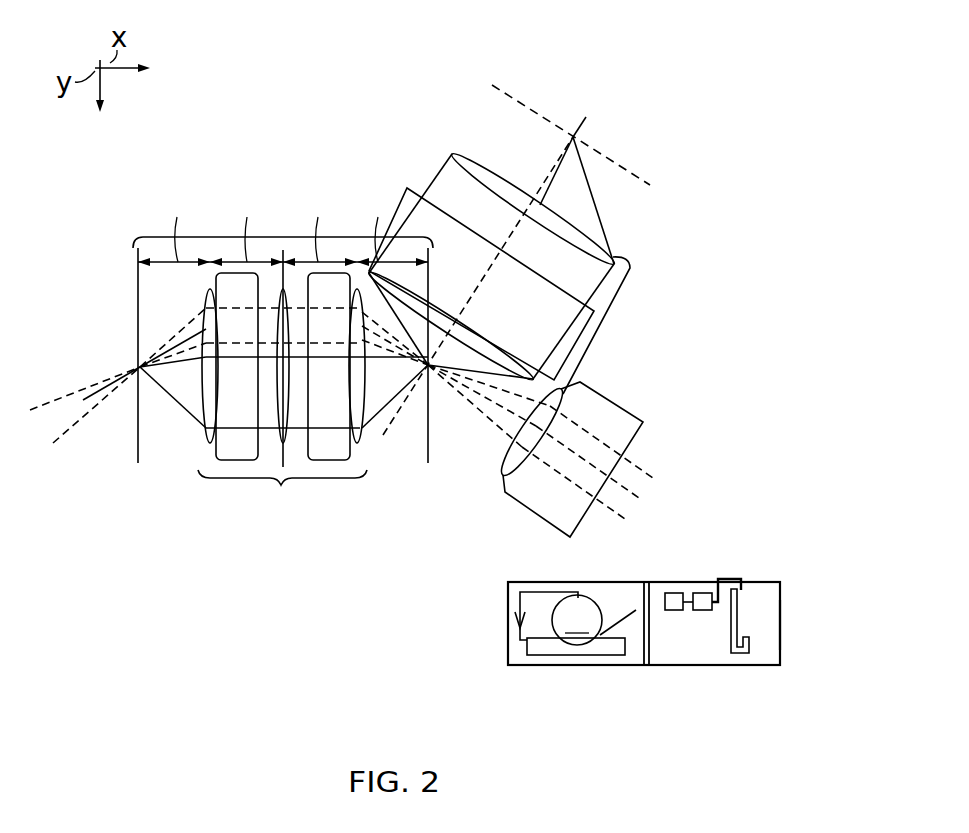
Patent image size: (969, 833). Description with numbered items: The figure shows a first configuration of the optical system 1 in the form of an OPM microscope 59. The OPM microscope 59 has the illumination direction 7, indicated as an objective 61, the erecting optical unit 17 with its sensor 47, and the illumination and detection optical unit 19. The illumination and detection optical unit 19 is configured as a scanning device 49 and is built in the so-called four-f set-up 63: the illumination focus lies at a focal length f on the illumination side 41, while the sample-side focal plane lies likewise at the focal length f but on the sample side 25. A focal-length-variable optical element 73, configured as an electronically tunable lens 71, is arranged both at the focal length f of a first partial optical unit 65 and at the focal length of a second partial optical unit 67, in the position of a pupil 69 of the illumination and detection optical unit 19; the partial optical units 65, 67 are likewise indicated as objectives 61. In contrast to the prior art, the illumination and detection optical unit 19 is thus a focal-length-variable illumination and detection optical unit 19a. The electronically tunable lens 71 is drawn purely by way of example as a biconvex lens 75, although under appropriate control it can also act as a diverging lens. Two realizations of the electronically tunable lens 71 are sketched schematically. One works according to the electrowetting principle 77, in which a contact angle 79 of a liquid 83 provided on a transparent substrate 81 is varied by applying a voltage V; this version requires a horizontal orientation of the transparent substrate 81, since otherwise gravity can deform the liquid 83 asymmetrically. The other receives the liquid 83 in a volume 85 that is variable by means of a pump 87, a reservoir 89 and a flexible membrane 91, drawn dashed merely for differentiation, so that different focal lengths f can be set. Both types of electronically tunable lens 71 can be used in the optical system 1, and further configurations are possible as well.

The optical system 1 is at (367, 286).
The OPM microscope 59 is at (270, 56).
The illumination direction 7 is at (602, 392).
The erecting optical unit 17 is at (591, 326).
The illumination and detection optical unit 19 is at (272, 371).
The focal-length-variable illumination and detection optical unit 19a is at (272, 371).
The scanning device 49 is at (279, 484).
The sample side 25 is at (162, 468).
The illumination side 41 is at (450, 458).
The sensor 47 is at (636, 177).
The objective 61 is at (238, 273).
The 4f set-up 63 is at (283, 250).
The first partial optical unit 65 is at (350, 462).
The second partial optical unit 67 is at (237, 460).
The pupil 69 is at (244, 430).
The electronically tunable lens 71 is at (735, 672).
The focal-length-variable optical element 73 is at (244, 430).
The biconvex lens 75 is at (283, 462).
The electrowetting principle 77 is at (575, 635).
The contact angle 79 is at (600, 635).
The transparent substrate 81 is at (610, 655).
The liquid 83 is at (577, 620).
The volume 85 is at (745, 620).
The pump 87 is at (670, 593).
The reservoir 89 is at (703, 593).
The flexible membrane 91 is at (757, 627).